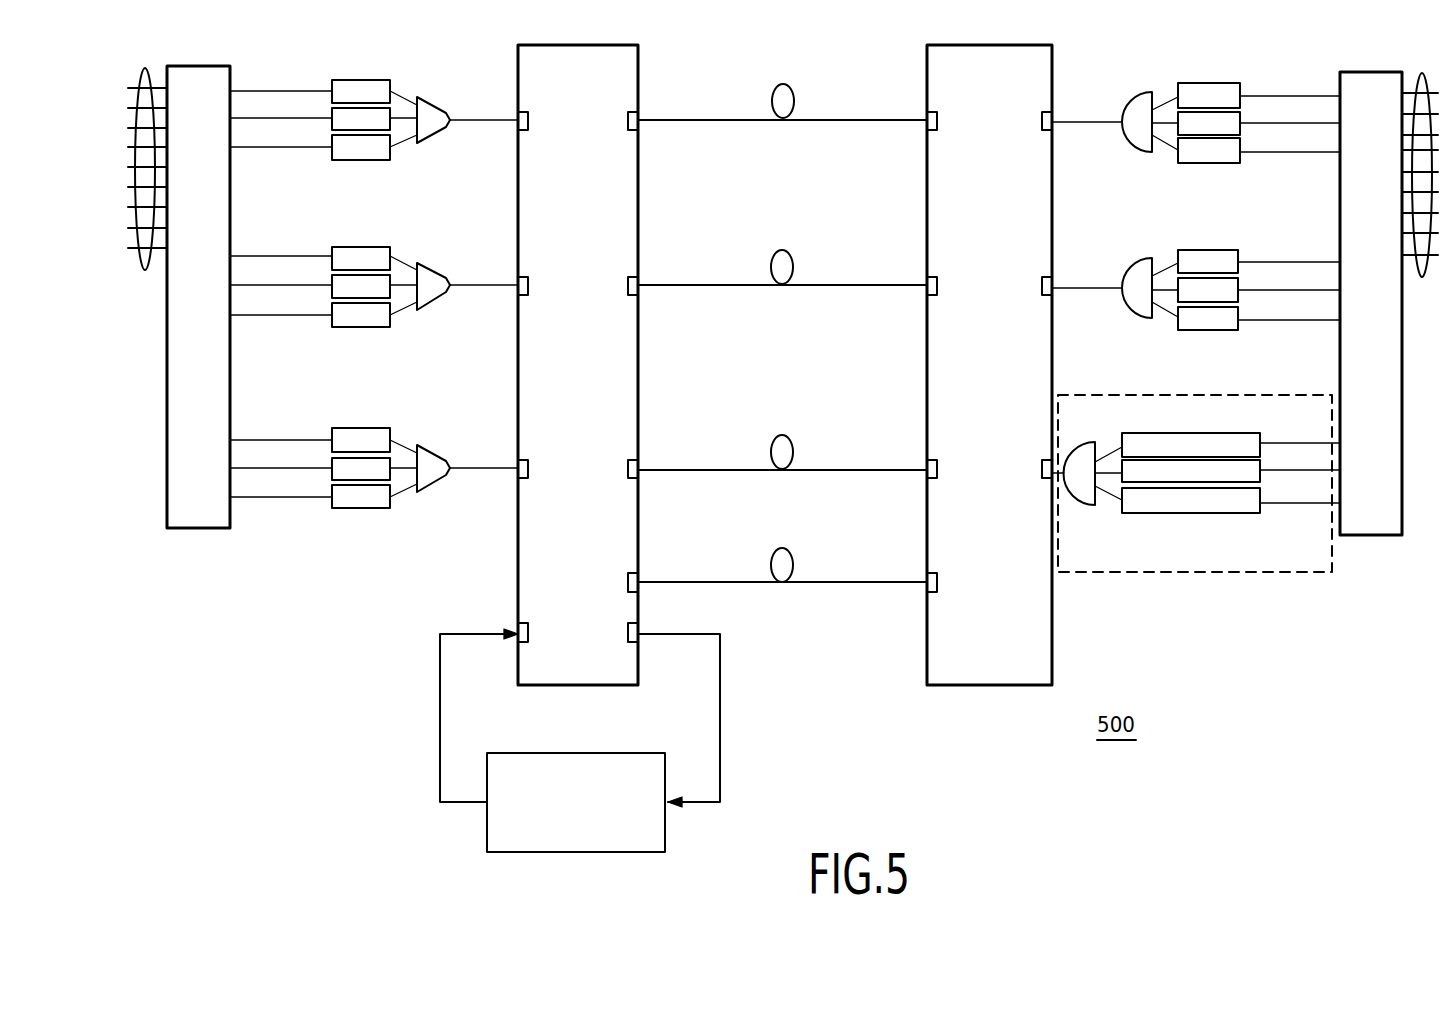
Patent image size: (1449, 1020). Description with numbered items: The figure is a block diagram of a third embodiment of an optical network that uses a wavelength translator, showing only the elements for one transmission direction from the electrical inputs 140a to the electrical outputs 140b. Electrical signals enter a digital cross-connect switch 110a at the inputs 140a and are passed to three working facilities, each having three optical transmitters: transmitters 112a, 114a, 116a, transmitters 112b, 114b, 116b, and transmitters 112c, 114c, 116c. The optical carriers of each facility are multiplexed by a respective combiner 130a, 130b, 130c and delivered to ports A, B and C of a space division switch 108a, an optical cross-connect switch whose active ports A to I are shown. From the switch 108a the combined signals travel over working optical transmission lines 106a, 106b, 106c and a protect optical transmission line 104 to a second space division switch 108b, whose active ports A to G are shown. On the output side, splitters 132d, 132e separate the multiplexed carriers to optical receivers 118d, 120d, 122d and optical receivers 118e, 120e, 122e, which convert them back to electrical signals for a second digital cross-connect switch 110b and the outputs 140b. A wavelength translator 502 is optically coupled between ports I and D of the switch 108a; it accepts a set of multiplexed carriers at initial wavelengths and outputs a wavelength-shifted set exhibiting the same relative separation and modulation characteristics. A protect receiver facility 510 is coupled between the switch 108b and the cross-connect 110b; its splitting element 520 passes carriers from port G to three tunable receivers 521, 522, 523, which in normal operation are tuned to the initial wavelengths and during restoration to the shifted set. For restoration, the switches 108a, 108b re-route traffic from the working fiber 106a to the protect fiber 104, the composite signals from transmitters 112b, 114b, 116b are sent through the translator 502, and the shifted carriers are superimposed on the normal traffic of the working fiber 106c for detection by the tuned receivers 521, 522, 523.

The digital cross-connect switch 110a is at (205, 528).
The digital cross-connect switch 110b is at (1357, 535).
The electrical inputs 140a is at (145, 270).
The electrical outputs 140b is at (1422, 277).
The optical transmitter 112a is at (332, 91).
The optical transmitter 114a is at (332, 118).
The optical transmitter 116a is at (332, 147).
The optical transmitter 112b is at (332, 256).
The optical transmitter 114b is at (332, 285).
The optical transmitter 116b is at (332, 315).
The optical transmitter 112c is at (332, 440).
The optical transmitter 114c is at (332, 468).
The optical transmitter 116c is at (332, 497).
The combiner 130a is at (432, 101).
The combiner 130b is at (432, 266).
The combiner 130c is at (432, 449).
The space division switch 108a is at (638, 66).
The space division switch 108b is at (977, 685).
The working optical transmission line 106a is at (692, 122).
The working optical transmission line 106b is at (688, 287).
The working optical transmission line 106c is at (688, 472).
The protect optical transmission line 104 is at (817, 584).
The wavelength translator 502 is at (527, 753).
The splitter 132d is at (1130, 98).
The splitter 132e is at (1128, 266).
The optical receiver 118d is at (1240, 88).
The optical receiver 120d is at (1240, 116).
The optical receiver 122d is at (1240, 144).
The optical receiver 118e is at (1238, 255).
The optical receiver 120e is at (1238, 283).
The optical receiver 122e is at (1238, 312).
The protect receiver facility 510 is at (1118, 572).
The splitting element 520 is at (1082, 444).
The tunable receiver 521 is at (1262, 440).
The tunable receiver 522 is at (1262, 466).
The tunable receiver 523 is at (1262, 496).